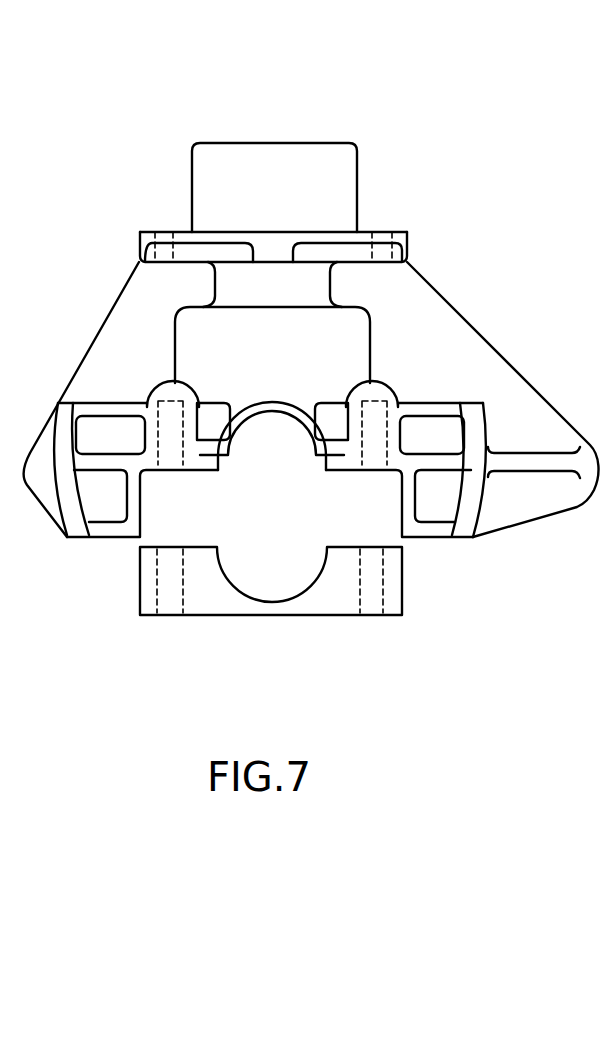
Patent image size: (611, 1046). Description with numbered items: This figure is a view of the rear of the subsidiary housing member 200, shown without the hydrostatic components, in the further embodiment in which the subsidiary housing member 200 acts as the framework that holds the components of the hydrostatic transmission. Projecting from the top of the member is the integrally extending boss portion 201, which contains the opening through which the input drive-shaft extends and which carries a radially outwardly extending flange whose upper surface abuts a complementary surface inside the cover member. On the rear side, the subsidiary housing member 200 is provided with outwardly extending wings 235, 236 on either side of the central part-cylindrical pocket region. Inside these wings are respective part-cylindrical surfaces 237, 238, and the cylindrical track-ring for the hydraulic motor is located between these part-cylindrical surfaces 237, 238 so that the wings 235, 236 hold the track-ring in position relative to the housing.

The subsidiary housing member 200 is at (446, 373).
The boss portion 201 is at (298, 188).
The outwardly extending wing 235 is at (78, 533).
The outwardly extending wing 236 is at (465, 530).
The part-cylindrical surface 237 is at (80, 438).
The part-cylindrical surface 238 is at (466, 441).